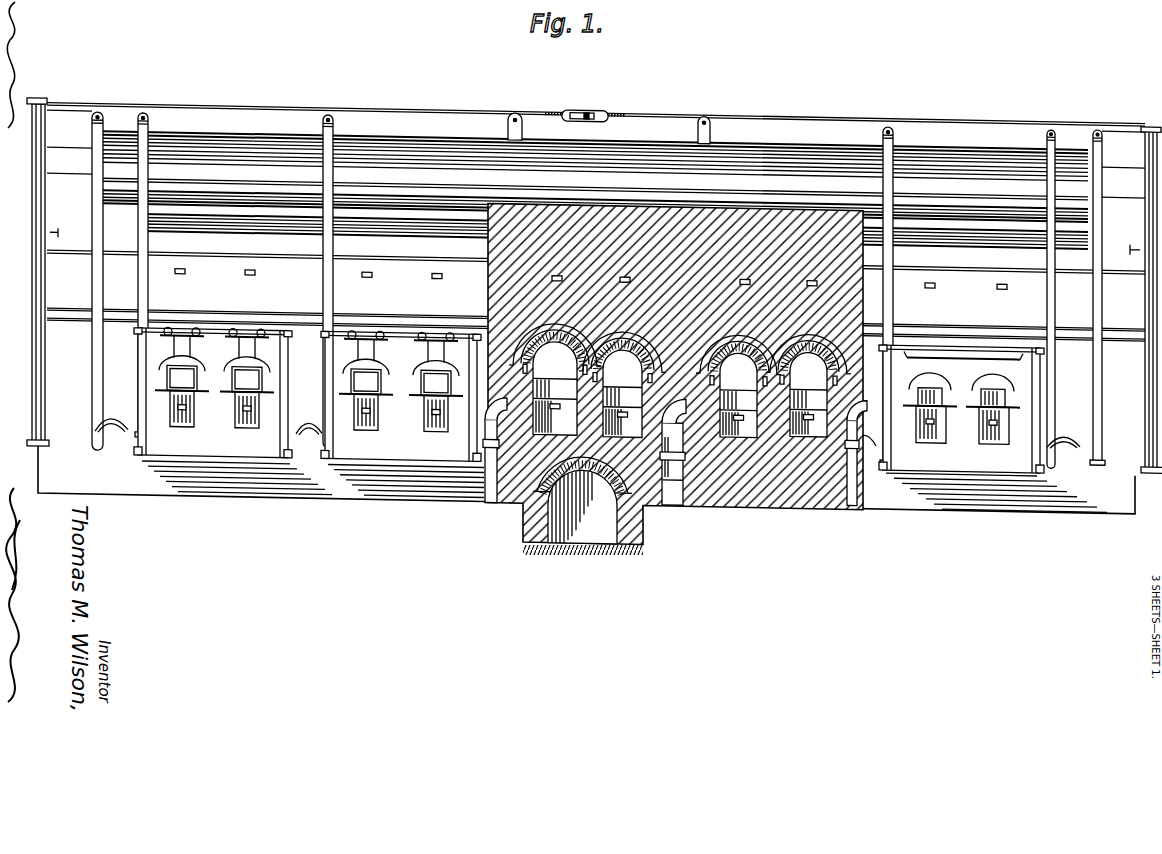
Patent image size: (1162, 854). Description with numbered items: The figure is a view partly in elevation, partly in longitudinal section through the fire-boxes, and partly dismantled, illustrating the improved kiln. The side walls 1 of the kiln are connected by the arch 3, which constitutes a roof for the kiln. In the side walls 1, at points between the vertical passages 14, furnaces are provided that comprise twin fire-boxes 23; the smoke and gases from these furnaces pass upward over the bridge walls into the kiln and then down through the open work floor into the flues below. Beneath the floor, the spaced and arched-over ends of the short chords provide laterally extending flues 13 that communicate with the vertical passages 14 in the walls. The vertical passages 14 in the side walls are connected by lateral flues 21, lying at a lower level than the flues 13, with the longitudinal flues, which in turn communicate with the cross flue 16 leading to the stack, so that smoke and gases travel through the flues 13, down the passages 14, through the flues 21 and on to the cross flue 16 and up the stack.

The side walls 1 is at (594, 306).
The arch 3 is at (424, 140).
The laterally extending flues 13 is at (508, 416).
The vertical passages 14 is at (489, 447).
The cross flue 16 is at (558, 523).
The lateral flues 21 is at (489, 488).
The twin fire-boxes 23 is at (680, 382).